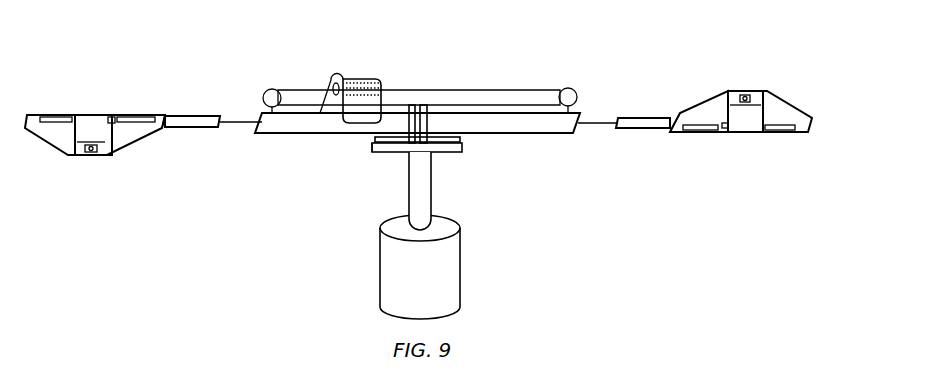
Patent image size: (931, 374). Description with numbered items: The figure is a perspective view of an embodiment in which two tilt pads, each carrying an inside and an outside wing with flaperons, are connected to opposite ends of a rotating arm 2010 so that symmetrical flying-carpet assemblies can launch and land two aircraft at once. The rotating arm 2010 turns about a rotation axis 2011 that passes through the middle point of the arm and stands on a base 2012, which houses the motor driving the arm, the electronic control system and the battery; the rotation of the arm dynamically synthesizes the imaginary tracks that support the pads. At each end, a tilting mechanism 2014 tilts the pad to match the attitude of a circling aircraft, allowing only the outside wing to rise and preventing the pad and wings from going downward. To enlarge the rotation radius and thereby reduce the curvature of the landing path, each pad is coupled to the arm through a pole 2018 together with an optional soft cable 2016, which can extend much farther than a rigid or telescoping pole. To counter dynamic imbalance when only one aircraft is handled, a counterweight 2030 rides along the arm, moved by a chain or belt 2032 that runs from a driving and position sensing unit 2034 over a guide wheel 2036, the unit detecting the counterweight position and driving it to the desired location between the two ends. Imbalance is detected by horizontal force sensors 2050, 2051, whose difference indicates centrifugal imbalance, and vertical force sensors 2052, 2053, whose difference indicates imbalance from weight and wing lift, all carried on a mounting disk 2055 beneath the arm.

The rotating arm 2010 is at (490, 134).
The rotation axis 2011 is at (433, 192).
The base 2012 is at (460, 280).
The tilting mechanism 2014 is at (158, 132).
The soft cable 2016 is at (240, 124).
The pole 2018 is at (190, 128).
The counterweight 2030 is at (352, 78).
The chain (or belt) 2032 is at (528, 88).
The driving and position sensing unit 2034 is at (271, 89).
The guide wheel 2036 is at (568, 88).
The horizontal force sensor 2050 is at (412, 112).
The horizontal force sensor 2051 is at (424, 112).
The vertical force sensor 2052 is at (373, 138).
The vertical force sensor 2053 is at (460, 139).
The mounting disk 2055 is at (365, 148).